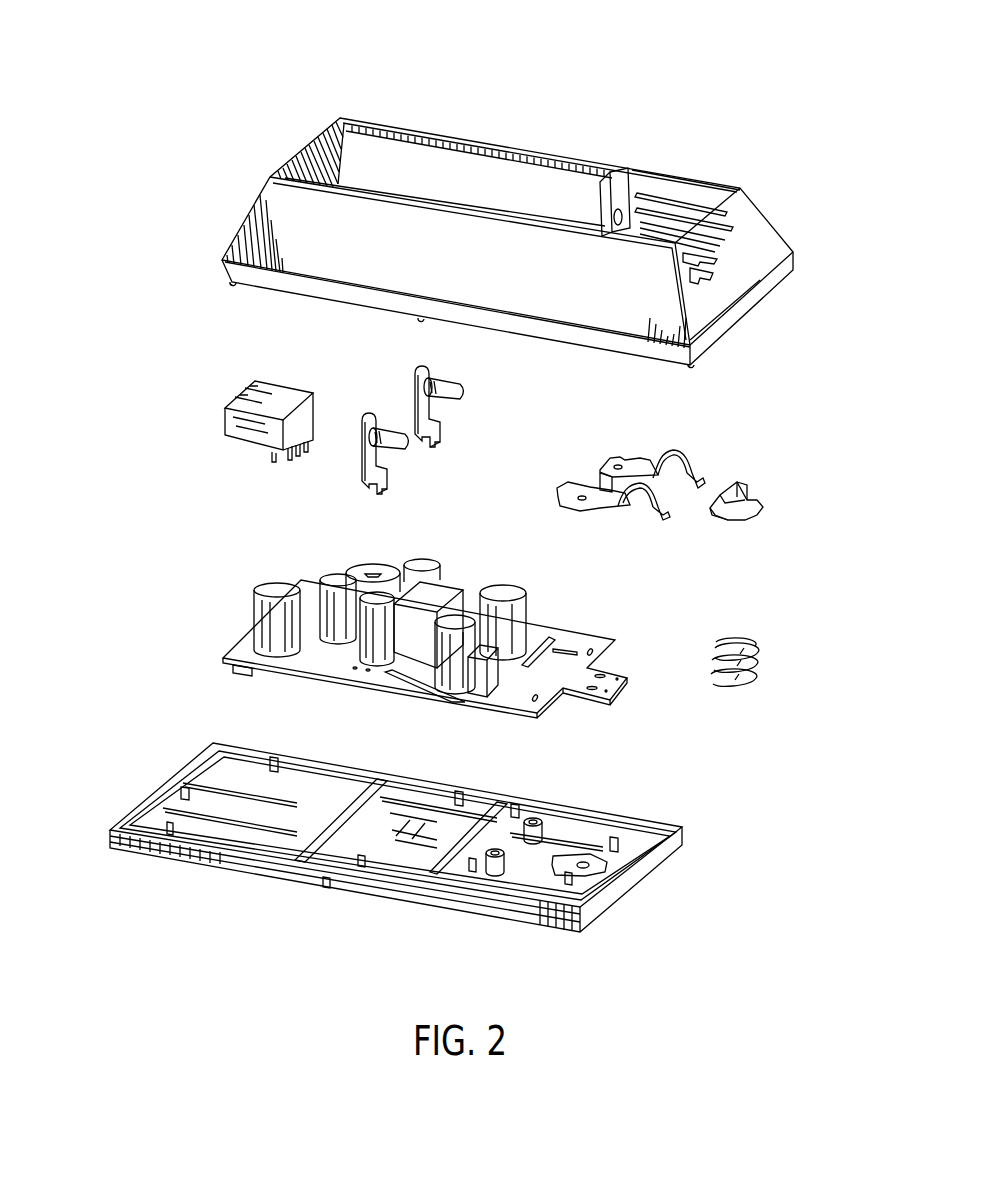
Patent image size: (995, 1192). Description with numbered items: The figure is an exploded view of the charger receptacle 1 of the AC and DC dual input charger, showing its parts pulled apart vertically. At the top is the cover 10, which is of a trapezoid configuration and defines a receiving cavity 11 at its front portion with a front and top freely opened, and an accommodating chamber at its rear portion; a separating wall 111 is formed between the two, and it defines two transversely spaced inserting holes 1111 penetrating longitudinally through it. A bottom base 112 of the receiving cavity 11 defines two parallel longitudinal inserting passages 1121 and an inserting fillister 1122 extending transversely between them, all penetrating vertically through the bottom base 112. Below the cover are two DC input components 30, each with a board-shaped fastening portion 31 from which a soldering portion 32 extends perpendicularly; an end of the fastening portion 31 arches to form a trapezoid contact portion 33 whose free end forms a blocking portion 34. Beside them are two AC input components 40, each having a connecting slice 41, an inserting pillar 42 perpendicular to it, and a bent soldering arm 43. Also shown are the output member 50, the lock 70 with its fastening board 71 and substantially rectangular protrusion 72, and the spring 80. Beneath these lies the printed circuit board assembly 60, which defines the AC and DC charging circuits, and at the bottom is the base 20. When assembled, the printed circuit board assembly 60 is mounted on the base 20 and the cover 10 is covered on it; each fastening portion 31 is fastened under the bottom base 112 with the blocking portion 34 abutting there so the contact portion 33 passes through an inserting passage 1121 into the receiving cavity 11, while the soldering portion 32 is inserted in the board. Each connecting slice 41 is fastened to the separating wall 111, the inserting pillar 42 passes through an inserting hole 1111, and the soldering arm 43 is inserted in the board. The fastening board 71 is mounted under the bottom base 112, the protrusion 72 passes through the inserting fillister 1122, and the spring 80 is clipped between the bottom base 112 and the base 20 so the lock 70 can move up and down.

The charger receptacle 1 is at (57, 48).
The cover 10 is at (214, 198).
The receiving cavity 11 is at (720, 183).
The separating wall 111 is at (625, 172).
The inserting holes 1111 is at (663, 212).
The bottom base 112 is at (712, 295).
The inserting passages 1121 is at (705, 256).
The inserting fillister 1122 is at (700, 280).
The base 20 is at (237, 840).
The DC input component 30 is at (678, 437).
The fastening portion 31 is at (625, 460).
The soldering portion 32 is at (604, 473).
The contact portion 33 is at (672, 456).
The blocking portion 34 is at (697, 484).
The AC input component 40 is at (345, 495).
The connecting slice 41 is at (370, 453).
The inserting pillar 42 is at (376, 430).
The soldering arm 43 is at (383, 496).
The output member 50 is at (232, 409).
The printed circuit board assembly 60 is at (573, 662).
The lock 70 is at (792, 513).
The fastening board 71 is at (735, 520).
The protrusion 72 is at (745, 487).
The spring 80 is at (760, 656).